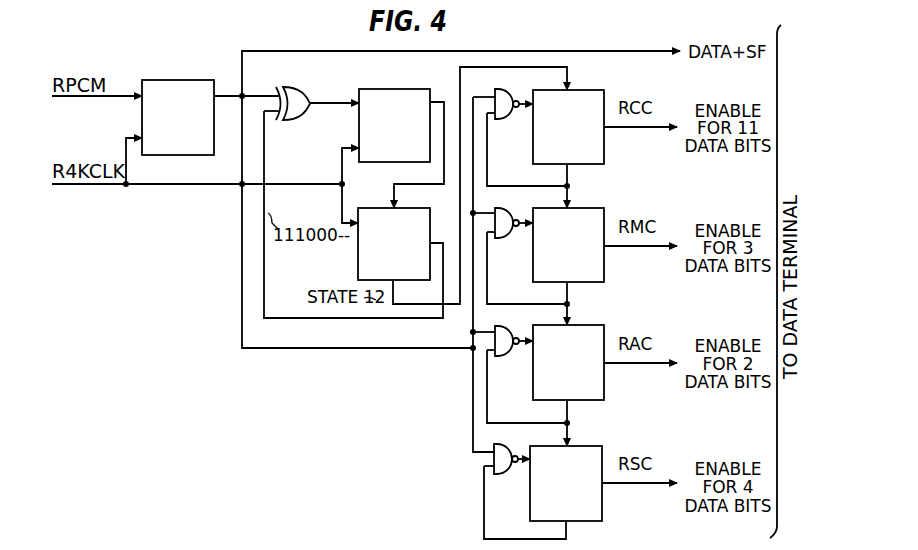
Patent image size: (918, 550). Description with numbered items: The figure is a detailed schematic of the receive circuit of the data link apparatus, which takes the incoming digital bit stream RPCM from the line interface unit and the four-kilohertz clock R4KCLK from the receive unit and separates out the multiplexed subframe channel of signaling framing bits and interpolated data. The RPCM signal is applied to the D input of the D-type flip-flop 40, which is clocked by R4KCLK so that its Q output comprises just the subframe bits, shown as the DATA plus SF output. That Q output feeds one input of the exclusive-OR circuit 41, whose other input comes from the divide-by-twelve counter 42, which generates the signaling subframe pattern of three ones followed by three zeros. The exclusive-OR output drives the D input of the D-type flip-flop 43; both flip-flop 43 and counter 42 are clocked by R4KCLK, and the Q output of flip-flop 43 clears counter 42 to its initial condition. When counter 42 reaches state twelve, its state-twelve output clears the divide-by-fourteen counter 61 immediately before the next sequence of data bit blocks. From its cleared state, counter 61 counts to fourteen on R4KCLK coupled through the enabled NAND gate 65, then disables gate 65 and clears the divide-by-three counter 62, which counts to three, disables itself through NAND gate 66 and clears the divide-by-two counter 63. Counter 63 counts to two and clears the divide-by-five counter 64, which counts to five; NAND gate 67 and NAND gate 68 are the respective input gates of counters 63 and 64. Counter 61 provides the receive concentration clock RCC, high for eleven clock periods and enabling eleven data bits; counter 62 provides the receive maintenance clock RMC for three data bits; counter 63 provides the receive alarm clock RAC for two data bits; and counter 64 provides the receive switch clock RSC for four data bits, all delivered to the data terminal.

The D-type flip-flop 40 is at (179, 79).
The exclusive-OR circuit 41 is at (303, 88).
The ÷12 counter 42 is at (358, 262).
The D-type flip-flop 43 is at (392, 88).
The ÷14 counter 61 is at (590, 88).
The ÷3 counter 62 is at (587, 206).
The ÷2 counter 63 is at (587, 324).
The ÷5 counter 64 is at (587, 446).
The NAND gate 65 is at (506, 121).
The NAND gate 66 is at (506, 240).
The NAND gate 67 is at (506, 358).
The NAND gate 68 is at (505, 476).